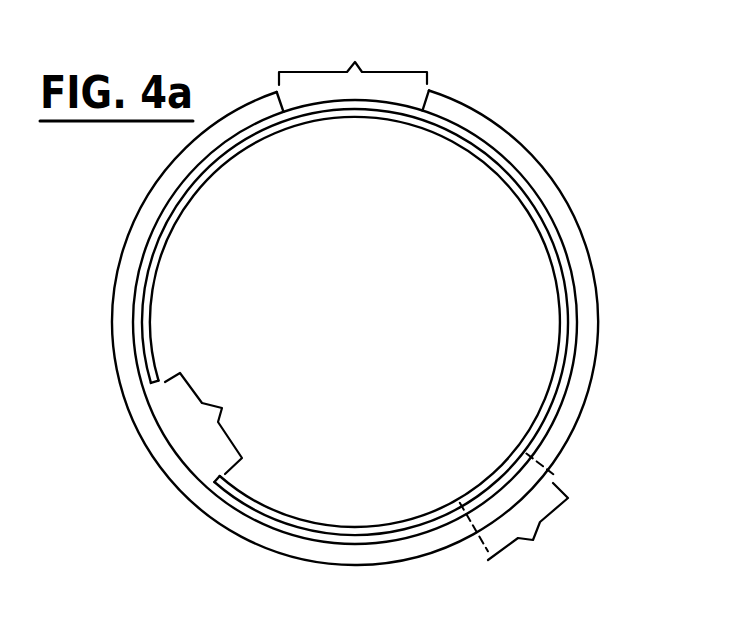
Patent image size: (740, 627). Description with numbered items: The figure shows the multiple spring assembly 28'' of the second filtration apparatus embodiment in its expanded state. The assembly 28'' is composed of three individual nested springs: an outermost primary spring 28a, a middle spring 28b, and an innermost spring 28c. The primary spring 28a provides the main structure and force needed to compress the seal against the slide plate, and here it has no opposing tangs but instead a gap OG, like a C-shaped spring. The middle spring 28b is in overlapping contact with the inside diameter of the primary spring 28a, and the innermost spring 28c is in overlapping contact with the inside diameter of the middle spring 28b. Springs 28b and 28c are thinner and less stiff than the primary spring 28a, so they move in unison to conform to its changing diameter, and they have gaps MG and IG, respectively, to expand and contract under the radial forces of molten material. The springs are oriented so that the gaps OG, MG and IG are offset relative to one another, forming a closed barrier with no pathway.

The multiple spring assembly 28'' is at (364, 318).
The outermost primary spring 28a is at (127, 262).
The middle spring 28b is at (503, 160).
The innermost spring 28c is at (568, 303).
The gap of primary spring OG is at (355, 62).
The gap of innermost spring IG is at (223, 408).
The gap of middle spring MG is at (533, 540).